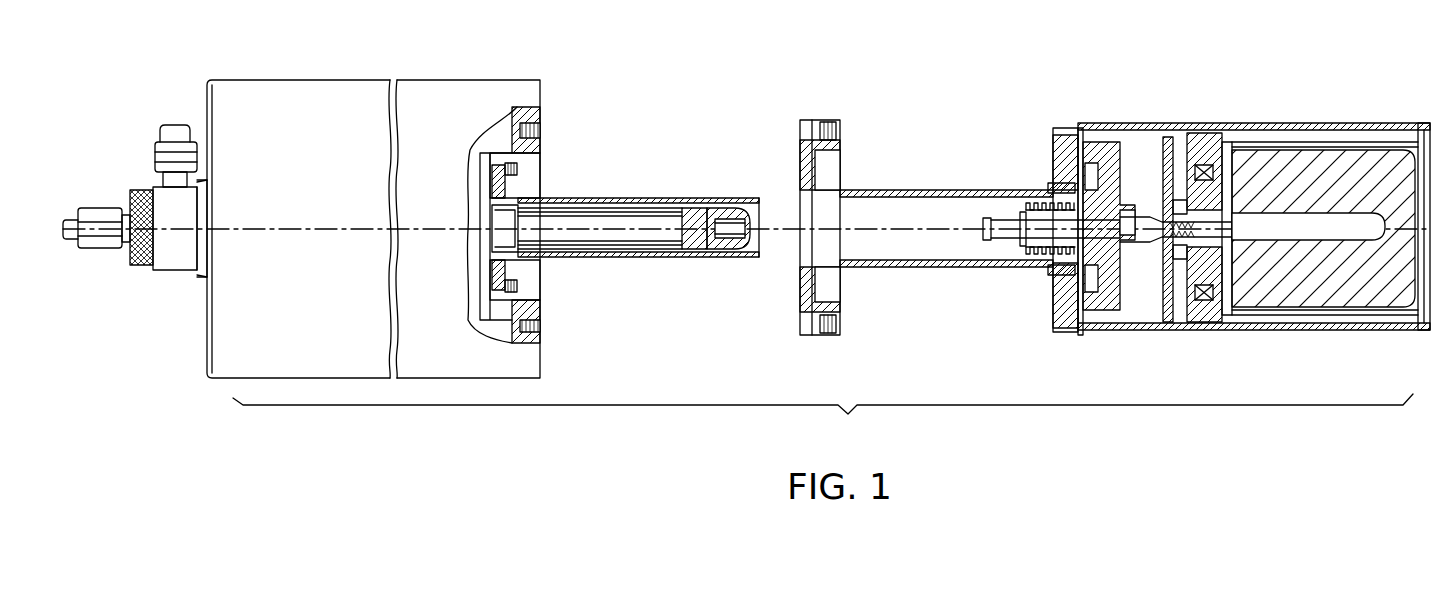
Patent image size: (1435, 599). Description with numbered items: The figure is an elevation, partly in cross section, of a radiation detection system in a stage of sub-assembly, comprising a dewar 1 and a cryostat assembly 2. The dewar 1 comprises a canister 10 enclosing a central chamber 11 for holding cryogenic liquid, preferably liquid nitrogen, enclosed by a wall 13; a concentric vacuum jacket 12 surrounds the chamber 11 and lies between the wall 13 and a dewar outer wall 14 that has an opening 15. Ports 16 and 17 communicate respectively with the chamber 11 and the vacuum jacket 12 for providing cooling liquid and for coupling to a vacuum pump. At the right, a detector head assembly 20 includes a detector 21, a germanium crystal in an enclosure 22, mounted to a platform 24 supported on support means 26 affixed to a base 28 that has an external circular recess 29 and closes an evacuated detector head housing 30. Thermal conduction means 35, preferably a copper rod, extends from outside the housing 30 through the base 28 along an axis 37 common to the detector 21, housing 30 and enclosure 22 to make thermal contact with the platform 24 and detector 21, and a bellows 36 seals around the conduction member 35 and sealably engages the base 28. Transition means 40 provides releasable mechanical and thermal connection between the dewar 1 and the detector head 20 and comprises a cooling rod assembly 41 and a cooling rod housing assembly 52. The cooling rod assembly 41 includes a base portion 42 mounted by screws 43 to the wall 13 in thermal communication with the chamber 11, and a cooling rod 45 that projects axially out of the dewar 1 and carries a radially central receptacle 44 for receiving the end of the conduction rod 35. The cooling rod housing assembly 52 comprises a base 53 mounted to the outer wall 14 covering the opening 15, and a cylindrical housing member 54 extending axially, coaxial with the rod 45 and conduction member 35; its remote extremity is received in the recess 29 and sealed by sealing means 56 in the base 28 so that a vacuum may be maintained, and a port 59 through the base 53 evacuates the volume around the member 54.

The dewar 1 is at (420, 203).
The cryostat assembly 2 is at (1140, 112).
The canister 10 is at (434, 86).
The central chamber 11 is at (470, 177).
The vacuum jacket 12 is at (500, 118).
The wall 13 is at (488, 158).
The dewar outer wall 14 is at (535, 337).
The opening 15 is at (540, 302).
The port 16 is at (70, 218).
The port 17 is at (175, 125).
The detector head assembly 20 is at (1284, 121).
The detector 21 is at (1322, 298).
The enclosure 22 is at (1253, 316).
The platform 24 is at (1164, 323).
The support means 26 is at (1118, 312).
The base 28 is at (1081, 334).
The external circular recess 29 is at (1062, 294).
The detector head housing 30 is at (1413, 332).
The thermal conduction means 35 is at (998, 219).
The bellows 36 is at (1035, 204).
The axis 37 is at (338, 233).
The transition means 40 is at (777, 267).
The cooling rod assembly 41 is at (638, 217).
The base portion 42 is at (497, 294).
The screws 43 is at (517, 170).
The receptacle 44 is at (705, 207).
The cooling rod 45 is at (619, 258).
The cooling rod housing assembly 52 is at (919, 190).
The base 53 is at (812, 305).
The cylindrical housing member 54 is at (918, 268).
The sealing means 56 is at (1056, 273).
The port 59 is at (818, 160).